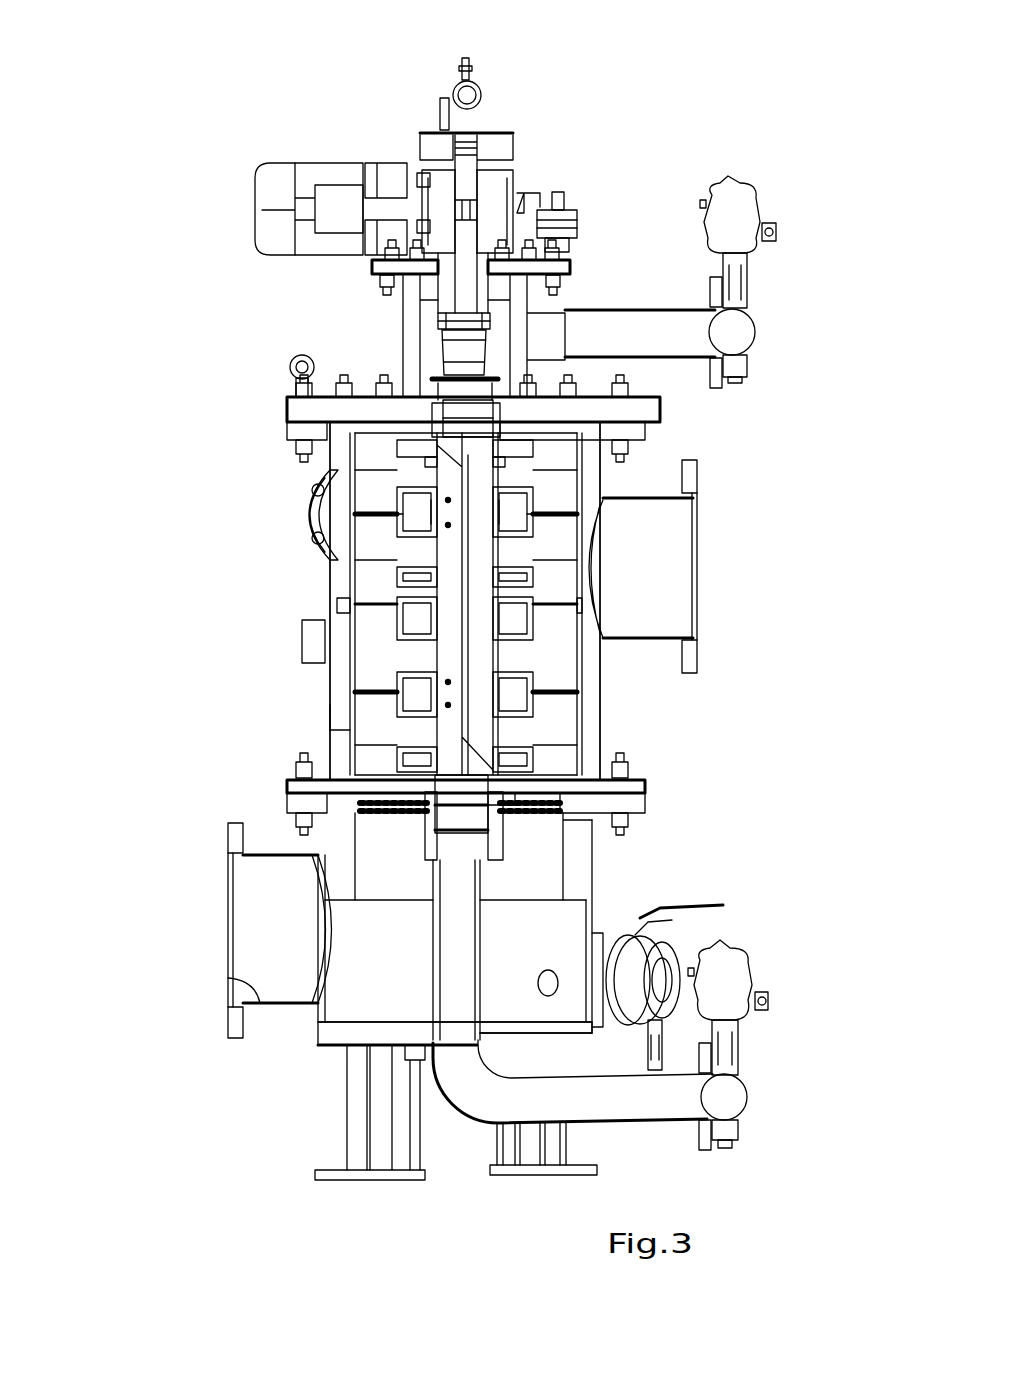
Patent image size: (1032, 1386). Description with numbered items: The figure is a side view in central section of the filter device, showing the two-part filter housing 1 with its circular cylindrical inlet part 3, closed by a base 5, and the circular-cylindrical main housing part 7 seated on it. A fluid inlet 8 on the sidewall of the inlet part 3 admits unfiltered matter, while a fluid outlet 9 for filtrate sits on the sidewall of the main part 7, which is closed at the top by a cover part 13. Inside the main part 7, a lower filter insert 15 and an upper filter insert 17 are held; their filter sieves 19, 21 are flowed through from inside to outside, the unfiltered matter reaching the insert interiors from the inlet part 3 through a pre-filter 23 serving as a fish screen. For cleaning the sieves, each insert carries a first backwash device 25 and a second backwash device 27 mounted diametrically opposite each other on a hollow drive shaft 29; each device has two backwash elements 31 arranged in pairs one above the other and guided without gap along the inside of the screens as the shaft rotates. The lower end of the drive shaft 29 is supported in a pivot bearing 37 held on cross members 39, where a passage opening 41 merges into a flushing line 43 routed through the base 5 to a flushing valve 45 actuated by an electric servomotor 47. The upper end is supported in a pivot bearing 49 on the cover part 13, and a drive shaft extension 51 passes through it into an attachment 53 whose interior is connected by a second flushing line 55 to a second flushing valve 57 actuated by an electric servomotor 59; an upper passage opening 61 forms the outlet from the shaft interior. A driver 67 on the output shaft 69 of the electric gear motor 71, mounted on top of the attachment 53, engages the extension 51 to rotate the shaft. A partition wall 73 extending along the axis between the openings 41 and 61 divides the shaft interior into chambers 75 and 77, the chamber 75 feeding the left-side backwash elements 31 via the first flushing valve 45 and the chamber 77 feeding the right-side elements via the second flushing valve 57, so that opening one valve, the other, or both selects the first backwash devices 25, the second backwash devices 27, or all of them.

The filter housing 1 is at (222, 636).
The inlet part 3 is at (602, 868).
The closed base 5 is at (340, 1030).
The main housing part 7 is at (335, 568).
The fluid inlet 8 is at (228, 978).
The fluid outlet 9 is at (653, 637).
The cover part 13 is at (368, 395).
The lower filter insert 15 is at (335, 717).
The upper filter insert 17 is at (328, 597).
The filter sieve 19 is at (580, 660).
The filter sieve 21 is at (610, 458).
The pre-filter 23 is at (565, 836).
The first backwash device 25 is at (350, 473).
The second backwash device 27 is at (580, 547).
The drive shaft 29 is at (407, 765).
The backwash elements 31 is at (597, 483).
The pivot bearing 37 is at (508, 813).
The cross members 39 is at (553, 820).
The passage opening 41 is at (460, 845).
The flushing line 43 is at (480, 1077).
The flushing valve 45 is at (732, 1092).
The electric servomotor 47 is at (728, 983).
The pivot bearing 49 is at (428, 462).
The drive shaft extension 51 is at (438, 352).
The attachment 53 is at (403, 352).
The second flushing line 55 is at (638, 330).
The second flushing valve 57 is at (742, 330).
The electric servomotor 59 is at (737, 210).
The upper passage opening 61 is at (462, 422).
The driver 67 is at (473, 382).
The output shaft 69 is at (560, 272).
The electric gear motor 71 is at (420, 208).
The partition wall 73 is at (465, 548).
The chamber 75 is at (447, 655).
The chamber 77 is at (483, 570).